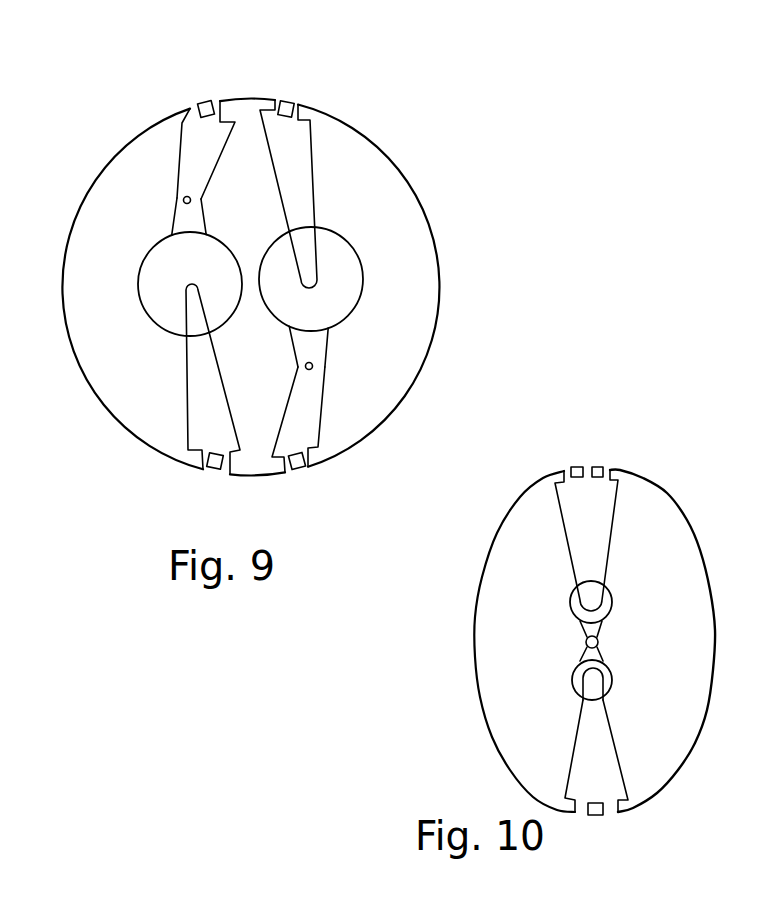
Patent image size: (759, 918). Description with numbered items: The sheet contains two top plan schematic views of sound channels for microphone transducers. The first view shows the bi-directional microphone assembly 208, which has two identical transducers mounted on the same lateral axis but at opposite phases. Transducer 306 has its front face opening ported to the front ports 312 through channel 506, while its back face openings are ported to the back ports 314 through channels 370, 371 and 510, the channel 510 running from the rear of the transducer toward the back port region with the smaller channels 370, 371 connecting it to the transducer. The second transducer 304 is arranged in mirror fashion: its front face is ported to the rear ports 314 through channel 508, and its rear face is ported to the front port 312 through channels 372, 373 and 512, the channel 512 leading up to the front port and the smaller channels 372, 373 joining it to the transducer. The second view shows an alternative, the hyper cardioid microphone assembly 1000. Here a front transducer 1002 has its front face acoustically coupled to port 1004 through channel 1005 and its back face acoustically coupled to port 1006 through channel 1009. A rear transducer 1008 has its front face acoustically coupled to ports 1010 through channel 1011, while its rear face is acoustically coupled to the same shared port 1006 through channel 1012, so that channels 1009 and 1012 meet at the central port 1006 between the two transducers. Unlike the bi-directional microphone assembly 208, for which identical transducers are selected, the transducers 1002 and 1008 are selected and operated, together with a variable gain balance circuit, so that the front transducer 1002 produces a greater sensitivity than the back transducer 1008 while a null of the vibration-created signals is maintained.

In FIG. 9, the bi-directional microphone assembly 208 is at (346, 111).
In FIG. 9, the transducer 304 is at (167, 257).
In FIG. 9, the transducer 306 is at (342, 283).
In FIG. 9, the front ports 312 is at (214, 100).
In FIG. 9, the back ports 314 is at (220, 468).
In FIG. 9, the channel 370 is at (312, 369).
In FIG. 9, the channel 371 is at (315, 350).
In FIG. 9, the channel 372 is at (184, 199).
In FIG. 9, the channel 373 is at (198, 223).
In FIG. 9, the channel 506 is at (298, 158).
In FIG. 9, the channel 508 is at (218, 413).
In FIG. 9, the channel 510 is at (305, 417).
In FIG. 9, the channel 512 is at (203, 163).
In FIG. 10, the hyper cardioid microphone assembly 1000 is at (673, 497).
In FIG. 10, the front transducer 1002 is at (607, 602).
In FIG. 10, the port 1004 is at (602, 472).
In FIG. 10, the channel 1005 is at (575, 547).
In FIG. 10, the port 1006 is at (600, 642).
In FIG. 10, the rear transducer 1008 is at (603, 680).
In FIG. 10, the channel 1009 is at (585, 628).
In FIG. 10, the ports 1010 is at (612, 808).
In FIG. 10, the channel 1011 is at (610, 753).
In FIG. 10, the channel 1012 is at (583, 652).